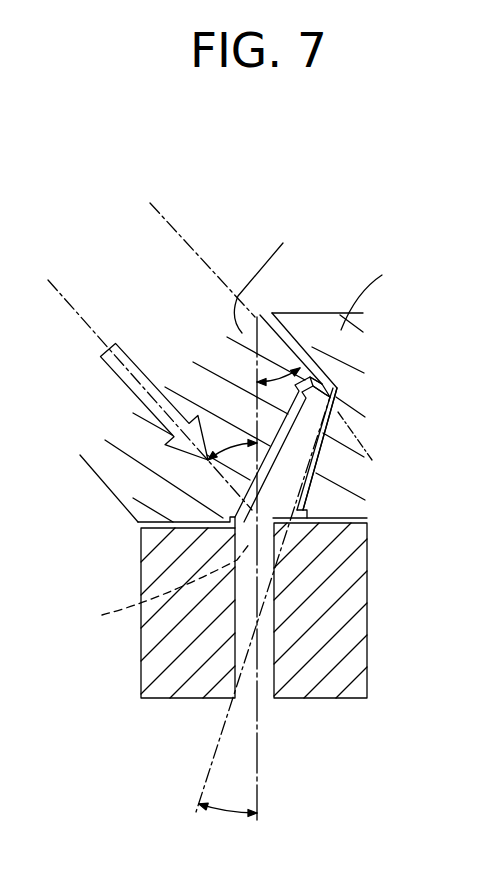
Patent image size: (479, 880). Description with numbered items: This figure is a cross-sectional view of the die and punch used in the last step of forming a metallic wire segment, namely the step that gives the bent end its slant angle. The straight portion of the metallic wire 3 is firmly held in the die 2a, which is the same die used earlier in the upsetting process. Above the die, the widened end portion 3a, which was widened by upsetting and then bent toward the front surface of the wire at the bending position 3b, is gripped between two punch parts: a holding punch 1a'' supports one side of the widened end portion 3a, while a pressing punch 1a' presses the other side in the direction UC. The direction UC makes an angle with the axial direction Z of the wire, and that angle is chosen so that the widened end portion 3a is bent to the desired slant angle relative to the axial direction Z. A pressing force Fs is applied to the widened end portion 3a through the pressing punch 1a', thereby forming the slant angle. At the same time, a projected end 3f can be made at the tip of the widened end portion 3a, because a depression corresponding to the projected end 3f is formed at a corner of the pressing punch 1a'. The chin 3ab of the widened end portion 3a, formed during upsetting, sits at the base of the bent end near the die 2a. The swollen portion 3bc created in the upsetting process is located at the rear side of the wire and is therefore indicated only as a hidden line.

The pressing punch 1a' is at (269, 275).
The holding punch 1a'' is at (341, 289).
The pressing direction UC is at (65, 265).
The pressing force Fs is at (137, 357).
The axial direction Z is at (260, 757).
The metallic wire 3 is at (263, 583).
The projected end 3f is at (330, 382).
The widened end portion 3a is at (295, 480).
The chin 3ab is at (307, 508).
The bending position 3b is at (237, 530).
The swollen portion 3bc is at (152, 586).
The die 2a is at (347, 654).